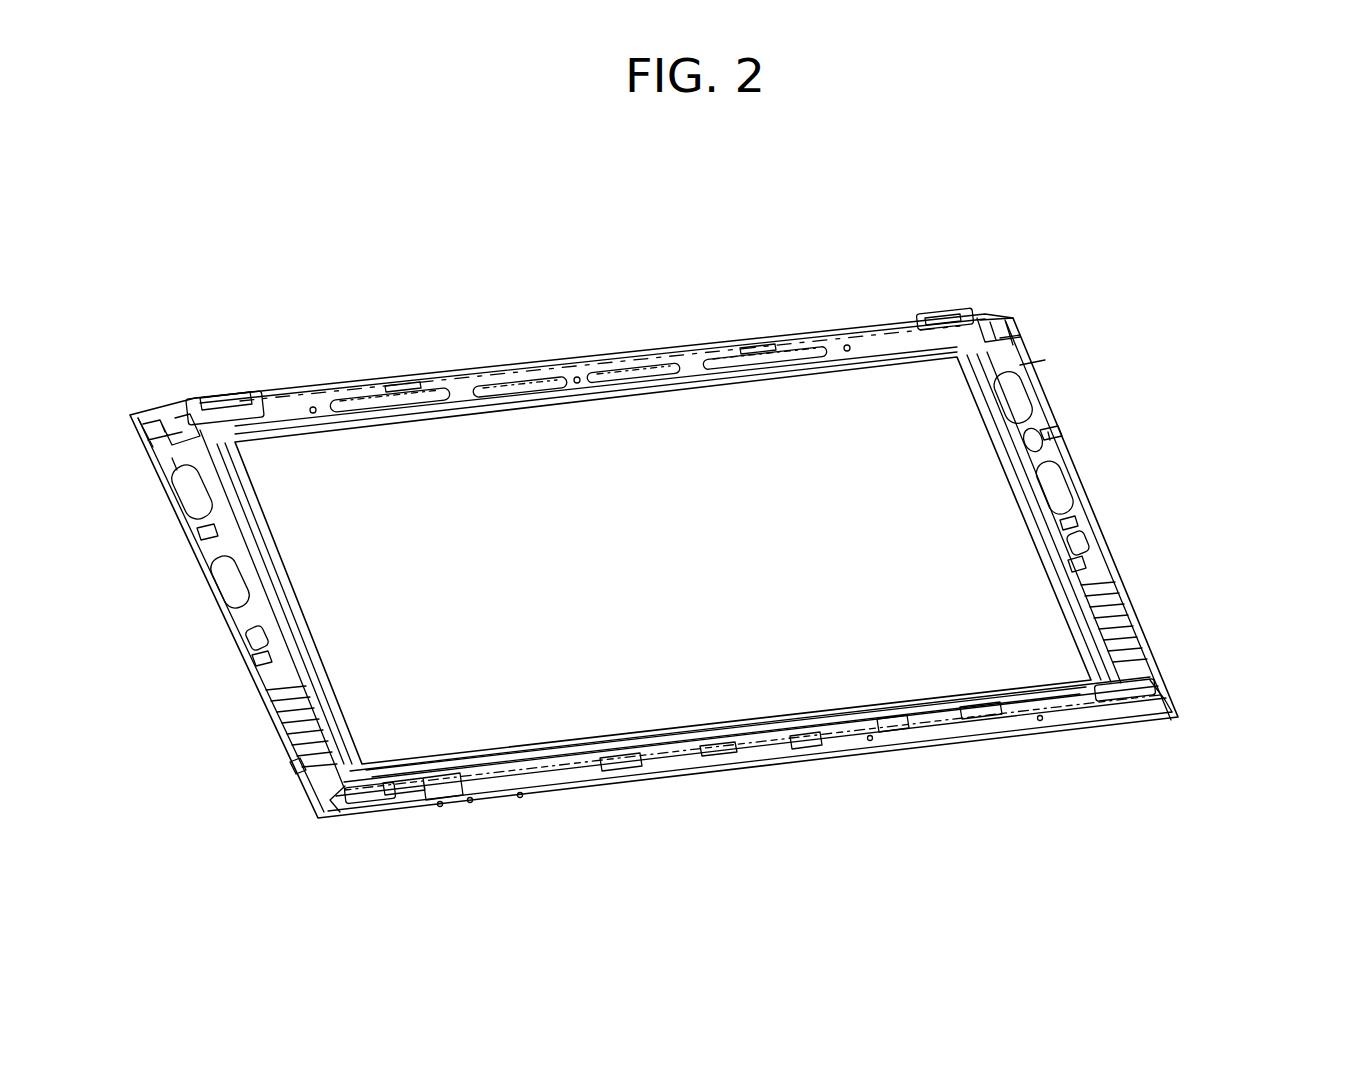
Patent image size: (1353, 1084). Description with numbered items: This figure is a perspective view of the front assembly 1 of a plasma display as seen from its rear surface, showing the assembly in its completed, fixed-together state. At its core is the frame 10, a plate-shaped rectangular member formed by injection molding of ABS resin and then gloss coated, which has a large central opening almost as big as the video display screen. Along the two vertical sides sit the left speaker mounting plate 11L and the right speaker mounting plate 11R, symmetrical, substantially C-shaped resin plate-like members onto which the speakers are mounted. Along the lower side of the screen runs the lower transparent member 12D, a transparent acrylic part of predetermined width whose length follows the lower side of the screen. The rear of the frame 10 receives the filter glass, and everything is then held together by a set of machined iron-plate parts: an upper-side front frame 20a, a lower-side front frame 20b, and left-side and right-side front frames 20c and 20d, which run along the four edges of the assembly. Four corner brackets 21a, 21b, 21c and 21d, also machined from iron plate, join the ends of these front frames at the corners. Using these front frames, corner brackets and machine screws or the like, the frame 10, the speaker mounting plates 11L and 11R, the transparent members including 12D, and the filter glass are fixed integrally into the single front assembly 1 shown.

The front assembly 1 is at (705, 588).
The frame 10 is at (248, 490).
The left speaker mounting plate 11L is at (1088, 513).
The right speaker mounting plate 11R is at (236, 614).
The lower transparent member 12D is at (752, 753).
The upper-side front frame 20a is at (565, 372).
The lower-side front frame 20b is at (800, 747).
The left-side front frame 20c is at (1057, 537).
The right-side front frame 20d is at (264, 688).
The corner bracket 21a is at (229, 418).
The corner bracket 21b is at (947, 311).
The corner bracket 21c is at (388, 800).
The corner bracket 21d is at (1128, 683).